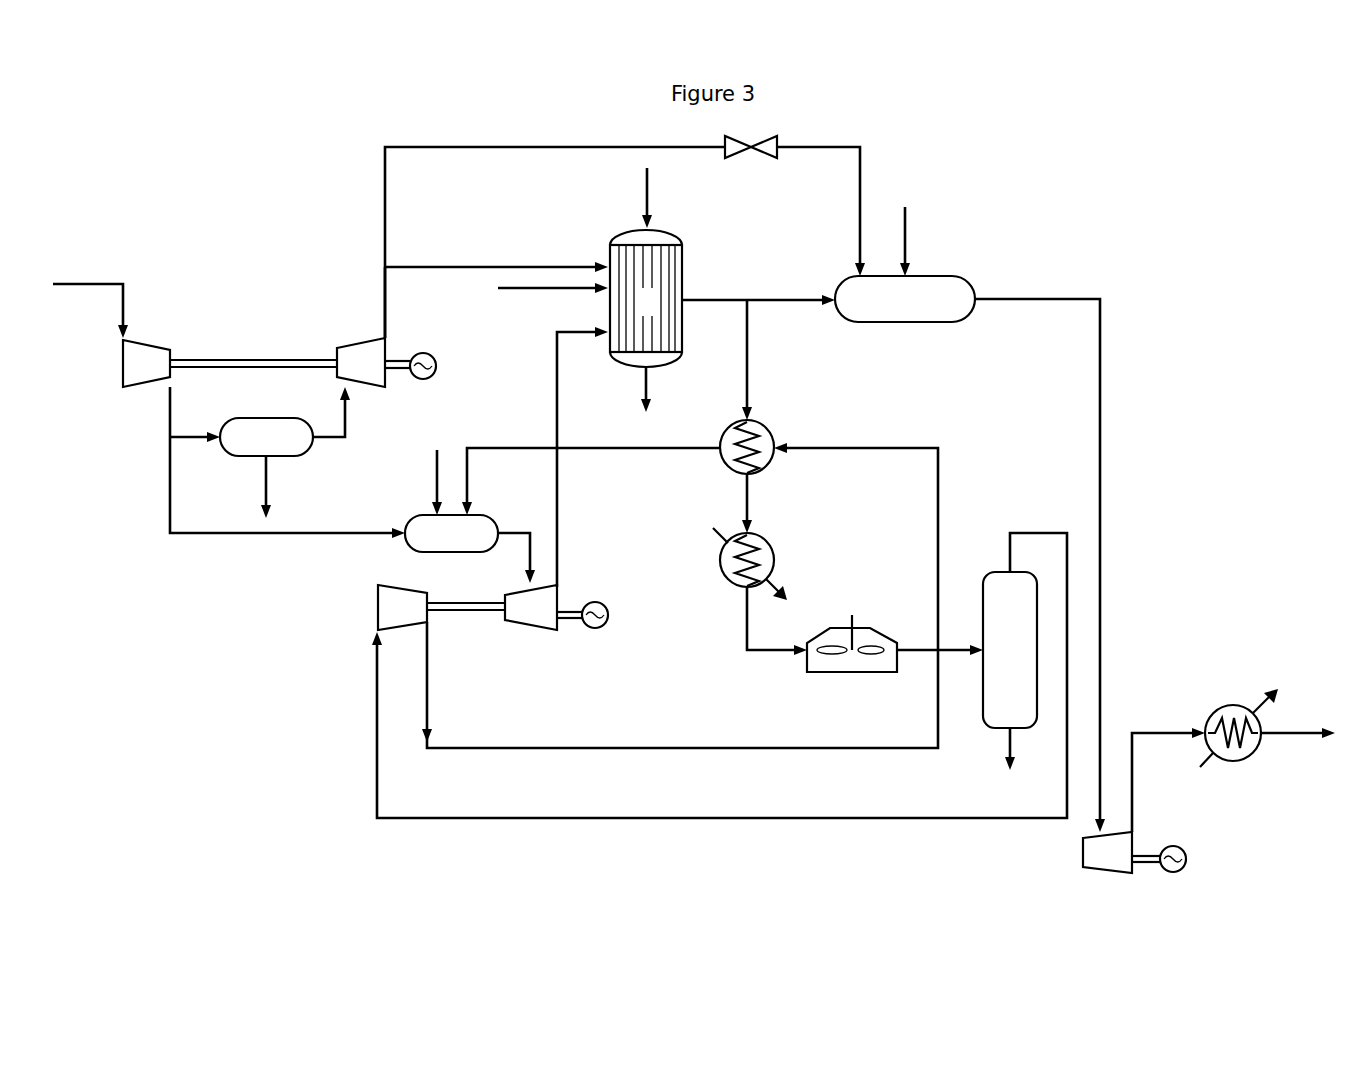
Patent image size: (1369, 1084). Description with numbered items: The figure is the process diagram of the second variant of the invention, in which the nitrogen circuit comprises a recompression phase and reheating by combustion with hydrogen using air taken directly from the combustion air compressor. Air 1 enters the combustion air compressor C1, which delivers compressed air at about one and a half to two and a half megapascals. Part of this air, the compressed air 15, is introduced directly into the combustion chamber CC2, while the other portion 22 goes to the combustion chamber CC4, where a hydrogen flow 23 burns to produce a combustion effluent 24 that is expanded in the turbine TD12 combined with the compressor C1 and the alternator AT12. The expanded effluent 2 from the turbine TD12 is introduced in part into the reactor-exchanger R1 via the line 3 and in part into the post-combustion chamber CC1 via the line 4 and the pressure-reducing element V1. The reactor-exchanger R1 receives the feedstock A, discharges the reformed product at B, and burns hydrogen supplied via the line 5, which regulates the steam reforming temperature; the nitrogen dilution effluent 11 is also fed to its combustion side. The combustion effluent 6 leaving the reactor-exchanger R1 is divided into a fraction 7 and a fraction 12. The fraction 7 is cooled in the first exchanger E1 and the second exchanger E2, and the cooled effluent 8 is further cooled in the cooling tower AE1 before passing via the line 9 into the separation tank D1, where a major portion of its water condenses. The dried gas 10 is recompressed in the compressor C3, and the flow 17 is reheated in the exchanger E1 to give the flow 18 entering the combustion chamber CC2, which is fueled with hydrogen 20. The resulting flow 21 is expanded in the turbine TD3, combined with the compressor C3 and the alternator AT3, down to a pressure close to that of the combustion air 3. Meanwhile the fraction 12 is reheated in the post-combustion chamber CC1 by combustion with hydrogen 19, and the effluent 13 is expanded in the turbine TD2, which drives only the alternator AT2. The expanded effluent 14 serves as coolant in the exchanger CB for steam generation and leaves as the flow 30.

The combustion air feed 1 is at (83, 284).
The compressed air / expanded effluent 2 is at (387, 307).
The combustion air line to reactor-exchanger 3 is at (462, 264).
The compressed air bypass line 4 is at (567, 150).
The hydrogen line 5 is at (525, 292).
The combustion effluent 6 is at (707, 298).
The recycled combustion effluent fraction 7 is at (752, 361).
The cooled combustion effluent 8 is at (742, 623).
The line to separation tank 9 is at (952, 653).
The dried combustion effluent 10 is at (753, 817).
The nitrogen dilution effluent 11 is at (555, 392).
The effluent fraction to post-combustion chamber 12 is at (778, 298).
The post-combustion effluent 13 is at (1103, 432).
The expanded effluent 14 is at (1158, 732).
The compressed air to combustion chamber CC2 15 is at (222, 538).
The recompressed nitrogen flow 17 is at (653, 747).
The reheated flow to combustion chamber CC2 18 is at (642, 453).
The hydrogen to post-combustion chamber 19 is at (910, 233).
The hydrogen to combustion chamber CC2 20 is at (430, 477).
The combustion chamber CC2 effluent 21 is at (512, 529).
The compressed air to combustion chamber CC4 22 is at (180, 436).
The hydrogen to combustion chamber CC4 23 is at (270, 489).
The combustion chamber CC4 effluent 24 is at (355, 421).
The outlet flow from exchanger CB 30 is at (1292, 732).
The reactor-exchanger feedstock A is at (643, 187).
The reactor-exchanger product outlet B is at (648, 382).
The combustion air compressor C1 is at (145, 345).
The recycle compressor C3 is at (377, 610).
The expansion turbine TD12 is at (370, 343).
The expansion turbine TD2 is at (1115, 877).
The expansion turbine TD3 is at (535, 632).
The alternator AT12 is at (426, 354).
The alternator AT2 is at (1172, 847).
The alternator AT3 is at (587, 602).
The post-combustion chamber CC1 is at (905, 299).
The combustion chamber CC2 is at (451, 533).
The combustion chamber CC4 is at (266, 437).
The reactor-exchanger R1 is at (646, 298).
The pressure-reducing element V1 is at (751, 158).
The first exchanger E1 is at (761, 455).
The second exchanger E2 is at (759, 564).
The cooling tower AE1 is at (852, 660).
The separation tank D1 is at (1010, 671).
The combined cycle exchanger CB is at (1247, 733).